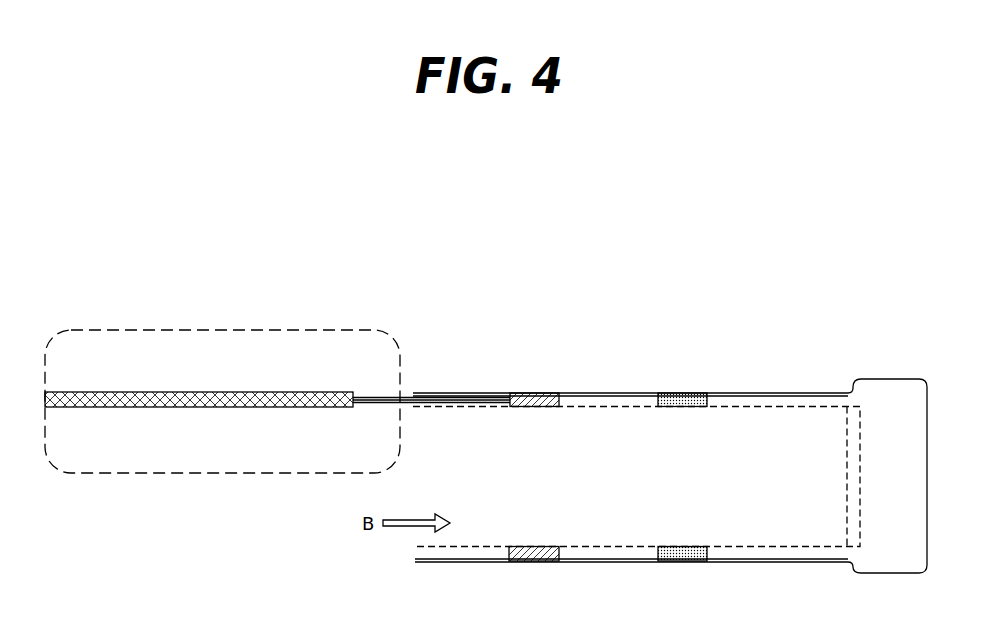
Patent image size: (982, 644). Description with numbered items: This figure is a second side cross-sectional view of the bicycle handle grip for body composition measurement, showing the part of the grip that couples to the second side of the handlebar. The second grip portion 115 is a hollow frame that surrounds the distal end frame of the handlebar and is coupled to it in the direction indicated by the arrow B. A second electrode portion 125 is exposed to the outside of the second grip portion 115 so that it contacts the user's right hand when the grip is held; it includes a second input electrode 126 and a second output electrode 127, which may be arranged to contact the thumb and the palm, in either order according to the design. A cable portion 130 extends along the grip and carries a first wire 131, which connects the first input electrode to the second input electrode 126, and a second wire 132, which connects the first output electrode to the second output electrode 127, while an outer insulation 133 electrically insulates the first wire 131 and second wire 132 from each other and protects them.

The second grip portion 115 is at (783, 392).
The second electrode portion 125 is at (713, 343).
The second input electrode 126 is at (541, 392).
The second output electrode 127 is at (684, 392).
The cable portion 130 is at (232, 330).
The first wire 131 is at (368, 405).
The second wire 132 is at (371, 398).
The outer insulation 133 is at (211, 392).